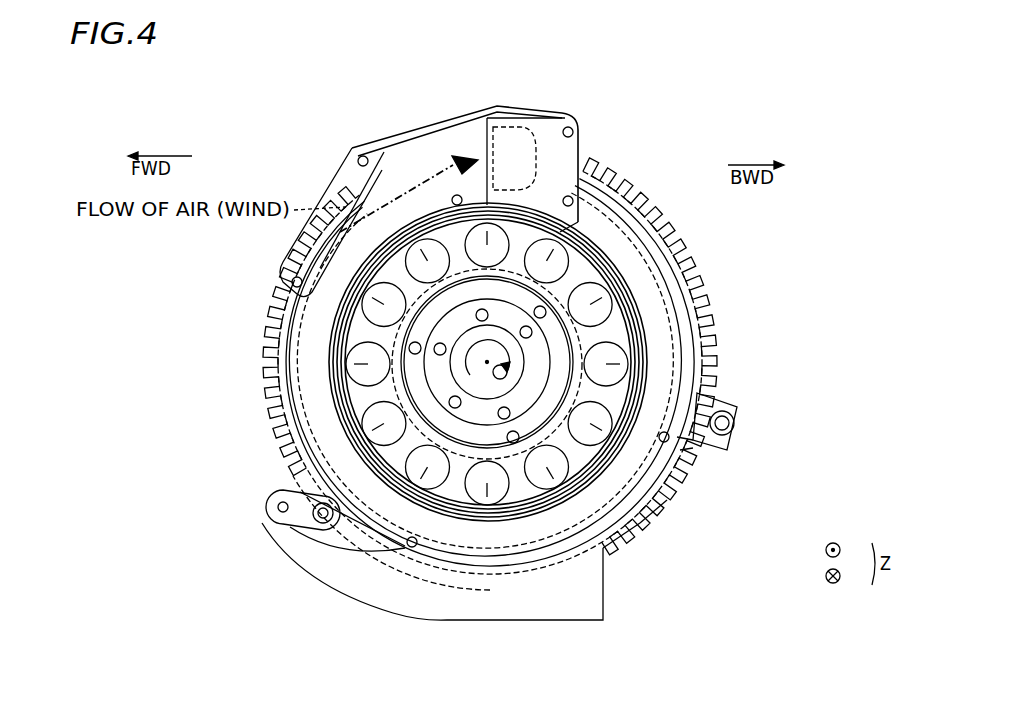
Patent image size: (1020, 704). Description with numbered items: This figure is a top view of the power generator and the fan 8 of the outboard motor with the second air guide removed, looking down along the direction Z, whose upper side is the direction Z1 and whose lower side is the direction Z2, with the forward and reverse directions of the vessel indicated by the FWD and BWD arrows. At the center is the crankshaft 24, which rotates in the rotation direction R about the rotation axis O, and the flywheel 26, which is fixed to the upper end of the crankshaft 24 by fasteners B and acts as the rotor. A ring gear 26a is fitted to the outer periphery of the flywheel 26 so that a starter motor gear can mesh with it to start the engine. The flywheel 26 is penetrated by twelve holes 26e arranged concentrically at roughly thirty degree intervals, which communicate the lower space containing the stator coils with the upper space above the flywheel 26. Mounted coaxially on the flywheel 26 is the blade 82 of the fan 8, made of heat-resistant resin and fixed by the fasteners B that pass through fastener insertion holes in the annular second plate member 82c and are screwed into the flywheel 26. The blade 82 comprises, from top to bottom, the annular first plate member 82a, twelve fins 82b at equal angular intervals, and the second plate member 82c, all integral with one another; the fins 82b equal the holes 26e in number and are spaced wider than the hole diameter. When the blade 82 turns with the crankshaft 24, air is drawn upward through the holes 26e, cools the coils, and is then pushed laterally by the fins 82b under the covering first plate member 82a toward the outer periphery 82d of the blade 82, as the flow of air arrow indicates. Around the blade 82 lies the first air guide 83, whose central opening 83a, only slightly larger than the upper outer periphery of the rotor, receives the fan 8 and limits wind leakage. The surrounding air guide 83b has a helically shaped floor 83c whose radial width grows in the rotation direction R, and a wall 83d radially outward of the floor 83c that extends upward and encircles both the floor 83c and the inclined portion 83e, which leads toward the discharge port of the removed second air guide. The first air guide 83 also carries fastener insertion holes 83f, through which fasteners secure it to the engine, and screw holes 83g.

The fan 8 is at (333, 594).
The crankshaft 24 is at (467, 385).
The flywheel 26 is at (458, 372).
The ring gear 26a is at (285, 388).
The holes 26e is at (420, 258).
The blade 82 is at (491, 426).
The first plate member 82a is at (640, 333).
The fins 82b is at (640, 208).
The second plate member 82c is at (520, 440).
The outer periphery 82d is at (647, 250).
The first air guide 83 is at (481, 356).
The opening 83a is at (603, 548).
The air guide 83b is at (700, 532).
The floor 83c is at (640, 523).
The wall 83d is at (667, 500).
The inclined portion 83e is at (503, 125).
The fastener insertion holes 83f is at (343, 148).
The screw holes 83g is at (285, 278).
The fasteners B is at (438, 650).
The direction Z1 is at (845, 550).
The direction Z2 is at (845, 576).